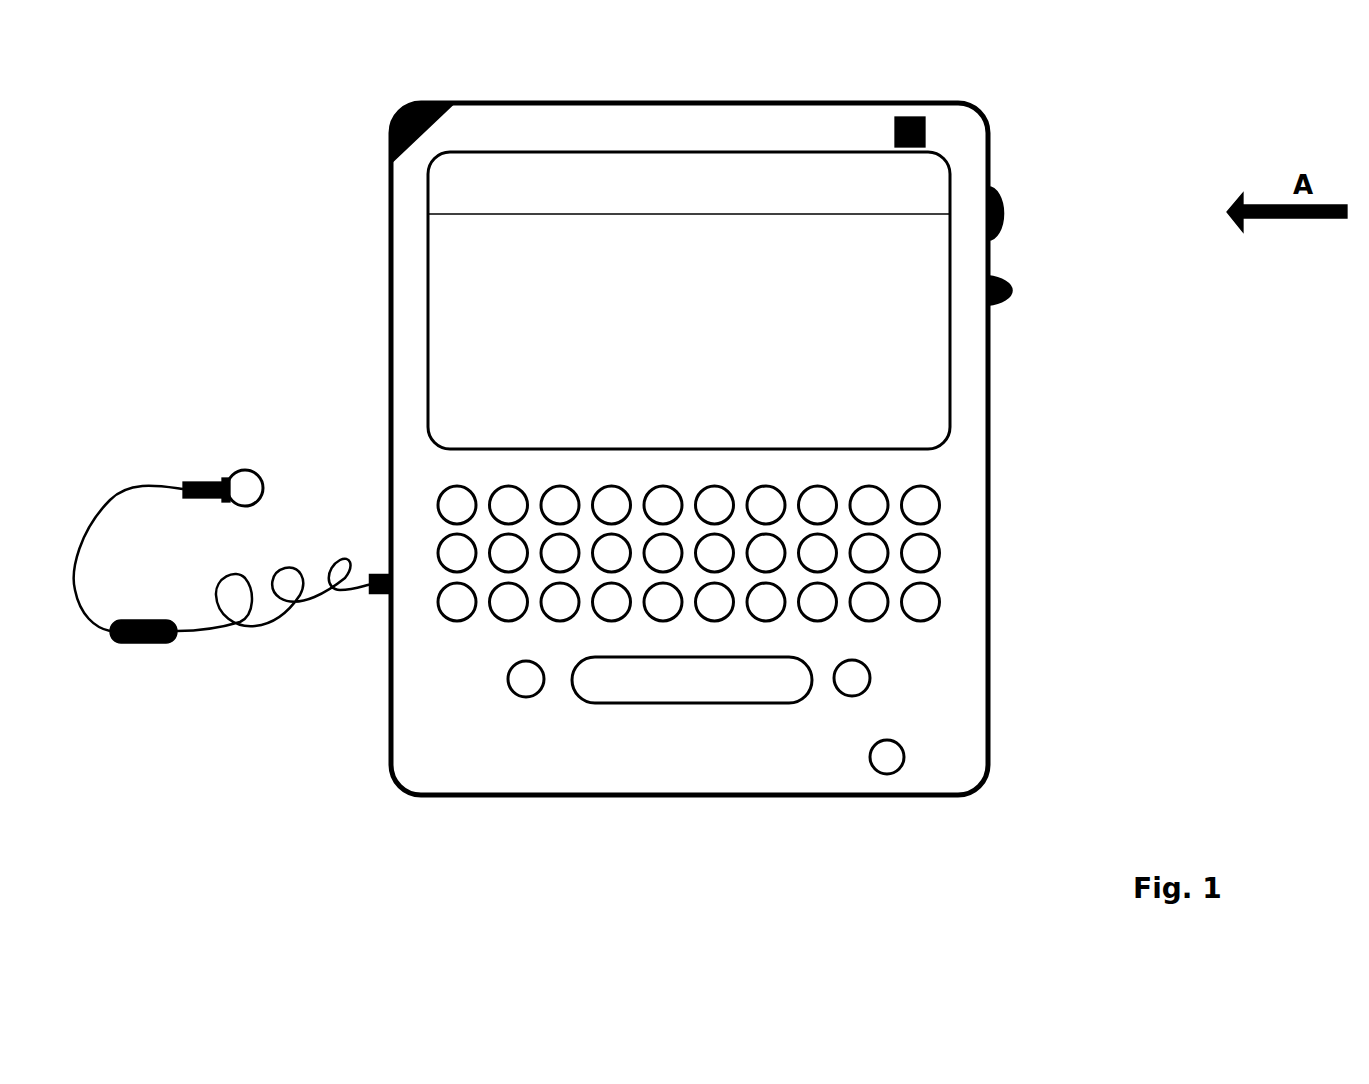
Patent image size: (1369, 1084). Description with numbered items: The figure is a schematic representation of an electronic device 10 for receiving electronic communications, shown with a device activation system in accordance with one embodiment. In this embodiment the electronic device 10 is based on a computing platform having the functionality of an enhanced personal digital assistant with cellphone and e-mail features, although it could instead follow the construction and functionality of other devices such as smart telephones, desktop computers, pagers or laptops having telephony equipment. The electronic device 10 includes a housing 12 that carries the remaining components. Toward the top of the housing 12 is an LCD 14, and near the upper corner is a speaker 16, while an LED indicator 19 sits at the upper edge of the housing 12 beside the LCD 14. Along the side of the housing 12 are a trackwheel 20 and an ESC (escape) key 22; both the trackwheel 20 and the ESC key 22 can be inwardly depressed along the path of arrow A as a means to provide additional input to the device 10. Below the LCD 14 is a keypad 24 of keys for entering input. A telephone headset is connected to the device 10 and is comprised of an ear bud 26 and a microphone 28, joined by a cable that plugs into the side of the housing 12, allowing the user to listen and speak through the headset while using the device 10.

The electronic device 10 is at (577, 798).
The housing 12 is at (823, 768).
The LCD 14 is at (928, 377).
The speaker 16 is at (373, 125).
The LED indicator 19 is at (940, 130).
The trackwheel 20 is at (1023, 213).
The ESC key 22 is at (1030, 292).
The keypad 24 is at (938, 552).
The ear bud 26 is at (262, 463).
The microphone 28 is at (143, 608).